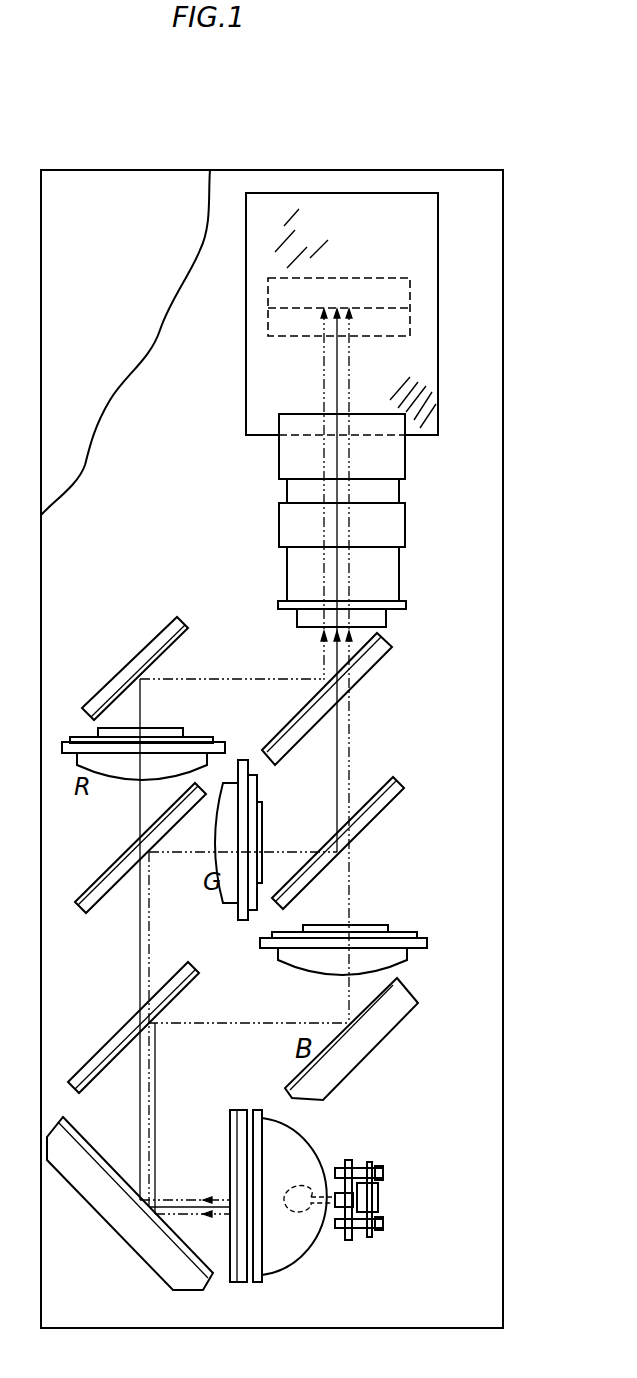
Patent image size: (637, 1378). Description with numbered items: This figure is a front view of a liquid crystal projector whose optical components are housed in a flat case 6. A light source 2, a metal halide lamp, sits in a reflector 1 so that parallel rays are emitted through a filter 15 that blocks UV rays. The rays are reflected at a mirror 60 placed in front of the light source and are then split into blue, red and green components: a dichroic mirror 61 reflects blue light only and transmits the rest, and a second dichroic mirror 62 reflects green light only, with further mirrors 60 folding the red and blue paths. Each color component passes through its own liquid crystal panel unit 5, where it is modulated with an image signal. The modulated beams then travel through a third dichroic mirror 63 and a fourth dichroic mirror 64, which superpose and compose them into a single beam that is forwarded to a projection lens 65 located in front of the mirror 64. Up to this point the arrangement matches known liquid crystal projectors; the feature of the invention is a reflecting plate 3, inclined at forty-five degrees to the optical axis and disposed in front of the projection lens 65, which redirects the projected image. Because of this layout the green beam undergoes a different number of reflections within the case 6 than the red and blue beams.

The reflector 1 is at (280, 1162).
The light source 2 is at (305, 1188).
The reflecting plate 3 is at (412, 256).
The liquid crystal panel unit 5 is at (220, 743).
The flat case 6 is at (480, 1108).
The filter 15 is at (230, 1170).
The mirror 60 is at (125, 662).
The dichroic mirror 61 is at (130, 1018).
The second dichroic mirror 62 is at (132, 840).
The third dichroic mirror 63 is at (358, 828).
The fourth dichroic mirror 64 is at (357, 670).
The projection lens 65 is at (393, 536).